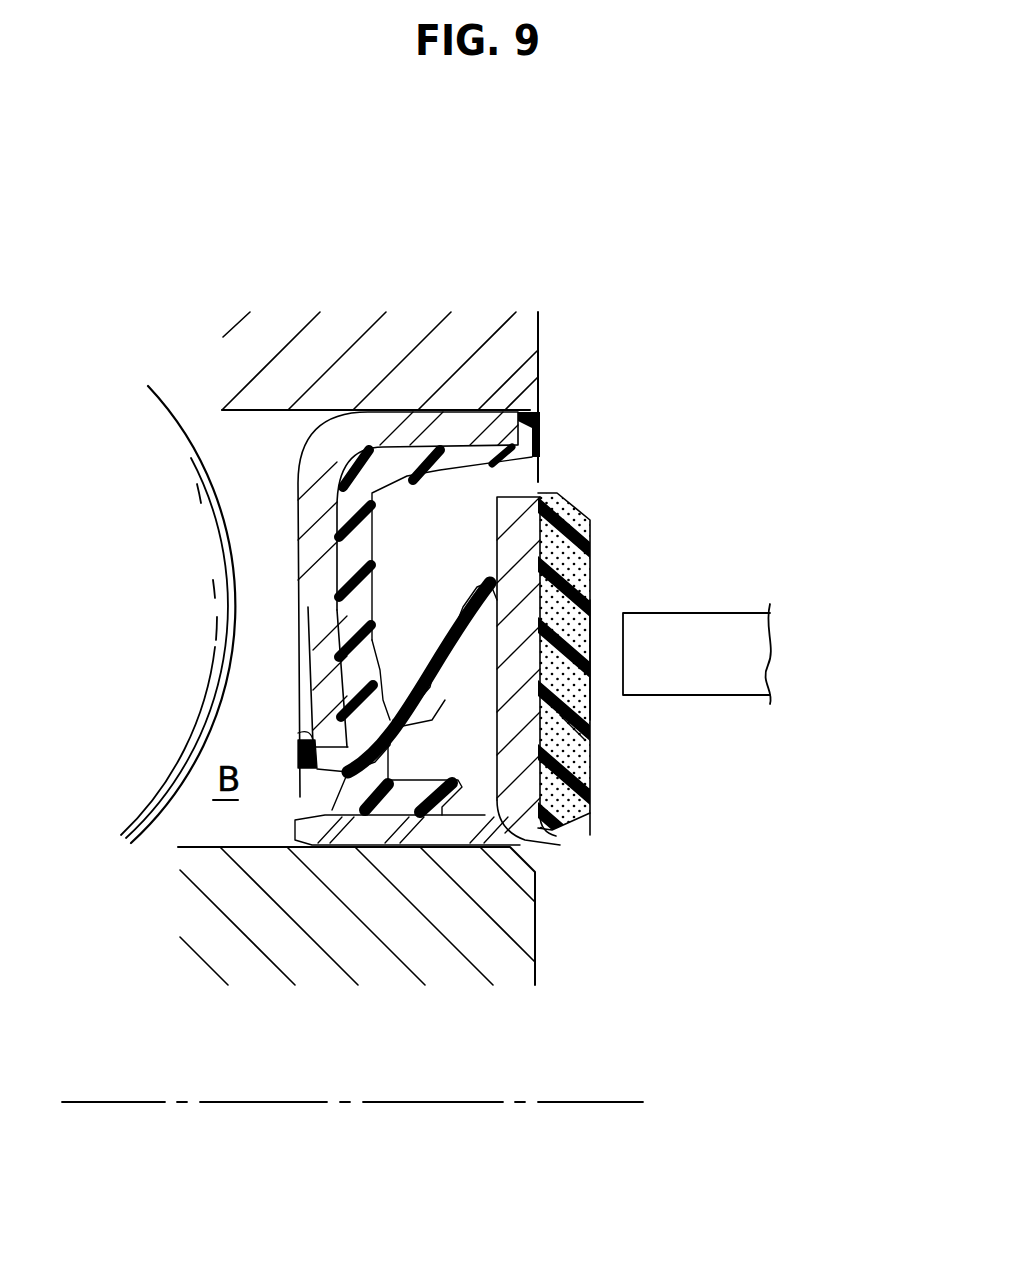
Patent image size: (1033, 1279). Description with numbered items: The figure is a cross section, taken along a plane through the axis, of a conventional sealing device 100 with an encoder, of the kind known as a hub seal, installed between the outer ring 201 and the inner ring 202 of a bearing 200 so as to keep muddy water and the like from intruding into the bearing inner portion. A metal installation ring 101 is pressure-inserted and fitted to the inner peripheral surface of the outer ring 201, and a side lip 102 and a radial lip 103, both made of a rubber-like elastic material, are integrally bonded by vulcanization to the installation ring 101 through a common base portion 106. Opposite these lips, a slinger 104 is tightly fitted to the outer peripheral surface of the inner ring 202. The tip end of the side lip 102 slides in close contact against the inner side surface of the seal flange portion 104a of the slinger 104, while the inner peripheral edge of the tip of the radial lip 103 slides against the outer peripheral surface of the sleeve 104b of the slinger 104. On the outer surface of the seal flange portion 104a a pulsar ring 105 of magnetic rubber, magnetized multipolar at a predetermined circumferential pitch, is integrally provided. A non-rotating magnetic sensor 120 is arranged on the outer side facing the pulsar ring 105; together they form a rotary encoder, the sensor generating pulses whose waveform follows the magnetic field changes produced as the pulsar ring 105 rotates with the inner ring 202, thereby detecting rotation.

The sealing device 100 is at (574, 396).
The installation ring 101 is at (318, 562).
The side lip 102 is at (477, 622).
The radial lip 103 is at (430, 820).
The slinger 104 is at (591, 522).
The seal flange portion 104a is at (592, 663).
The sleeve 104b is at (383, 832).
The pulsar ring 105 is at (577, 740).
The base portion 106 is at (363, 673).
The magnetic sensor 120 is at (723, 665).
The bearing 200 is at (291, 263).
The outer ring 201 is at (402, 330).
The inner ring 202 is at (300, 948).